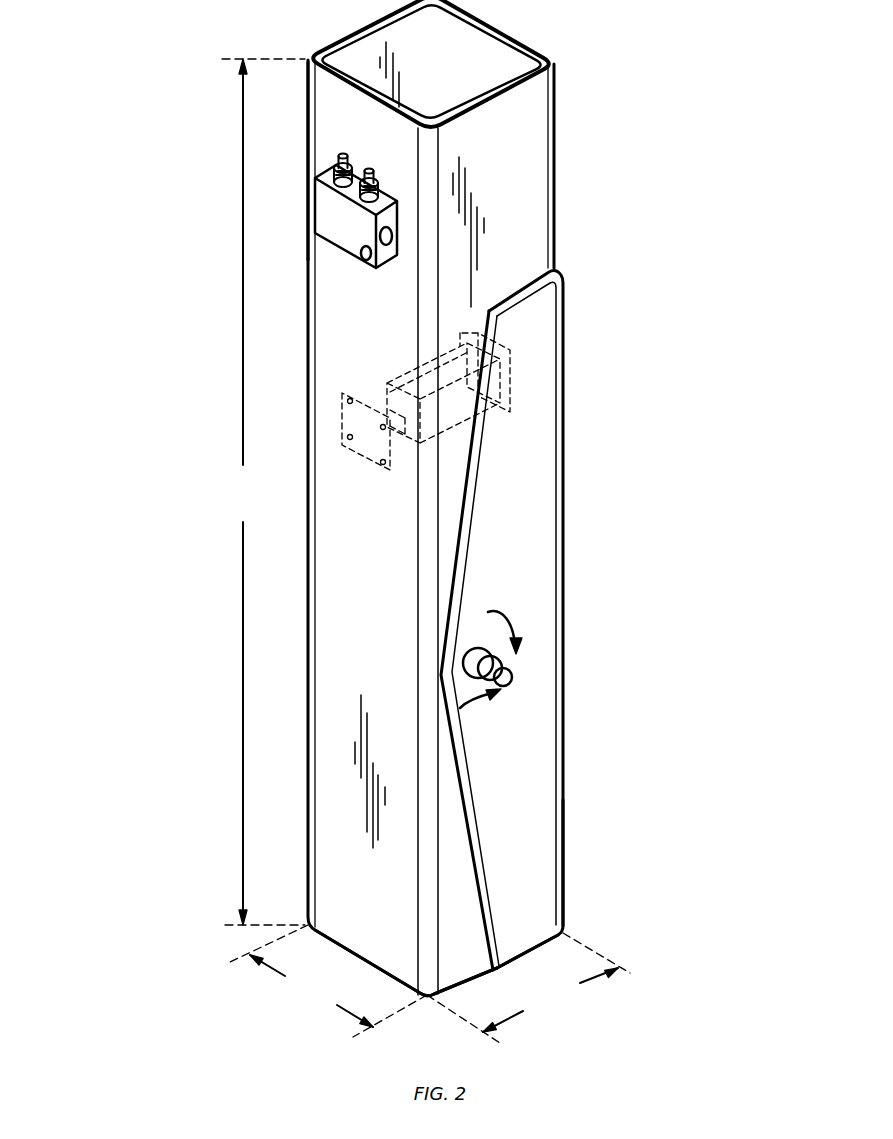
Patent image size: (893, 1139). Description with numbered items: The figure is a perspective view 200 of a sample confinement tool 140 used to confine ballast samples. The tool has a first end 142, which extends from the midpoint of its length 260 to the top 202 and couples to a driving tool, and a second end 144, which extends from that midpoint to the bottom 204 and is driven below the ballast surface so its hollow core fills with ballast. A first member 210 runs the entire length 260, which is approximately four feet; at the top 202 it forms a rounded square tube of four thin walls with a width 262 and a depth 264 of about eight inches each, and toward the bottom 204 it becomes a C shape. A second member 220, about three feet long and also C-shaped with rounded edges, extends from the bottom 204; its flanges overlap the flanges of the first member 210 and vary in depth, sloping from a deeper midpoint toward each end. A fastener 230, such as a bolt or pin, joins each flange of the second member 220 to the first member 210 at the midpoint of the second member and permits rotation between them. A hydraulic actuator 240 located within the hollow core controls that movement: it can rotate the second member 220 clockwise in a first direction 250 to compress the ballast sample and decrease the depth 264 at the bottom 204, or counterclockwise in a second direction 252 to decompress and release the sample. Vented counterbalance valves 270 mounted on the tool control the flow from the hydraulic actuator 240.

The top 202 is at (495, 31).
The perspective view 200 is at (646, 51).
The first end 142 is at (555, 119).
The sample confinement tool 140 is at (542, 498).
The vented counterbalance valves 270 is at (343, 238).
The hydraulic actuator 240 is at (440, 418).
The second member 220 is at (530, 484).
The first member 210 is at (405, 561).
The first direction 250 is at (505, 615).
The fastener 230 is at (512, 683).
The second direction 252 is at (478, 710).
The second end 144 is at (530, 873).
The bottom 204 is at (542, 947).
The length 260 is at (259, 492).
The width 262 is at (328, 981).
The depth 264 is at (528, 989).